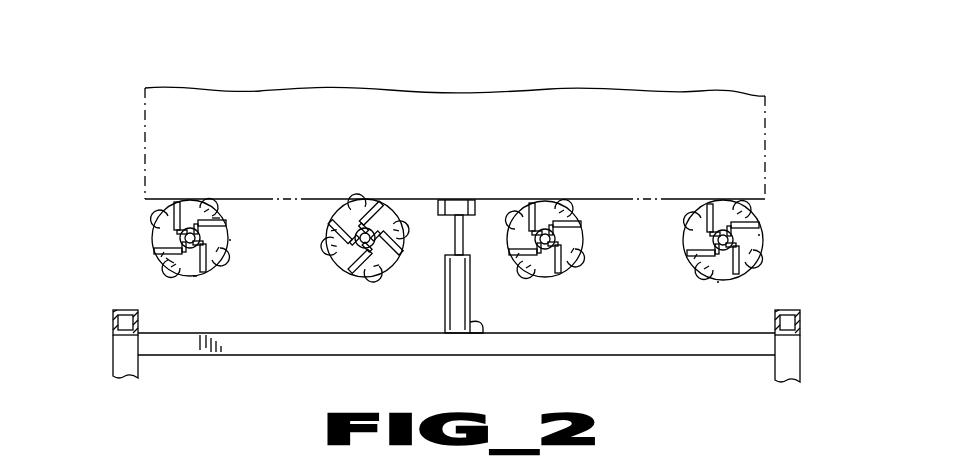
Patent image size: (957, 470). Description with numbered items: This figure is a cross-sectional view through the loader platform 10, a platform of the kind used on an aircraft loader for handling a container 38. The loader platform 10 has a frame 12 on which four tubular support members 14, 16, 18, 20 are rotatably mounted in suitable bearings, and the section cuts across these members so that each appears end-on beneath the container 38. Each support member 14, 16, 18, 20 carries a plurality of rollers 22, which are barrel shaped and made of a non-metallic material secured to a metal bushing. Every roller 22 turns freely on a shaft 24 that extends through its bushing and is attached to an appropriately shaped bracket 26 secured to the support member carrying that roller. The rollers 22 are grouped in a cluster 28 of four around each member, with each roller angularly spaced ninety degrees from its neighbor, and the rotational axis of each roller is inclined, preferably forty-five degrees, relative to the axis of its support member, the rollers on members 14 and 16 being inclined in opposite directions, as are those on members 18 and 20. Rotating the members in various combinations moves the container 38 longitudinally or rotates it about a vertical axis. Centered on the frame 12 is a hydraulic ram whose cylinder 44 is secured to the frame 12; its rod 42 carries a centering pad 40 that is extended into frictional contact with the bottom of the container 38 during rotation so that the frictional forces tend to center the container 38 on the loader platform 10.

The loader platform 10 is at (105, 345).
The frame 12 is at (790, 350).
The support member 14 is at (197, 200).
The support member 16 is at (380, 200).
The support member 18 is at (560, 201).
The support member 20 is at (715, 204).
The roller 22 is at (229, 240).
The shaft 24 is at (168, 258).
The bracket 26 is at (222, 217).
The cluster 28 is at (142, 237).
The container 38 is at (765, 97).
The centering pad 40 is at (455, 200).
The rod 42 is at (453, 243).
The cylinder 44 is at (470, 300).